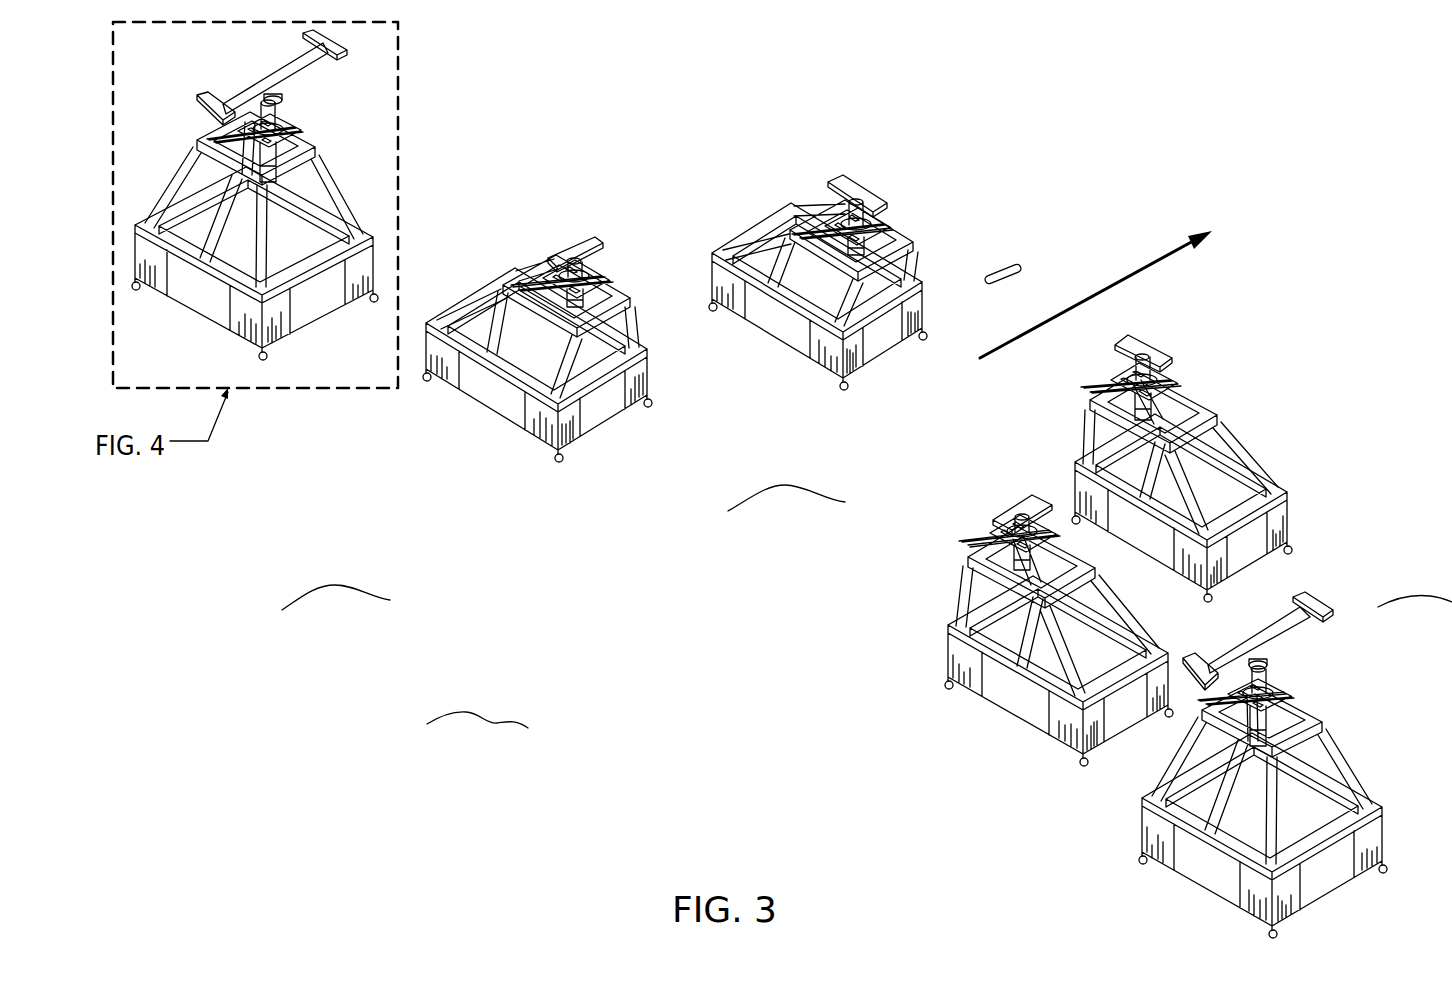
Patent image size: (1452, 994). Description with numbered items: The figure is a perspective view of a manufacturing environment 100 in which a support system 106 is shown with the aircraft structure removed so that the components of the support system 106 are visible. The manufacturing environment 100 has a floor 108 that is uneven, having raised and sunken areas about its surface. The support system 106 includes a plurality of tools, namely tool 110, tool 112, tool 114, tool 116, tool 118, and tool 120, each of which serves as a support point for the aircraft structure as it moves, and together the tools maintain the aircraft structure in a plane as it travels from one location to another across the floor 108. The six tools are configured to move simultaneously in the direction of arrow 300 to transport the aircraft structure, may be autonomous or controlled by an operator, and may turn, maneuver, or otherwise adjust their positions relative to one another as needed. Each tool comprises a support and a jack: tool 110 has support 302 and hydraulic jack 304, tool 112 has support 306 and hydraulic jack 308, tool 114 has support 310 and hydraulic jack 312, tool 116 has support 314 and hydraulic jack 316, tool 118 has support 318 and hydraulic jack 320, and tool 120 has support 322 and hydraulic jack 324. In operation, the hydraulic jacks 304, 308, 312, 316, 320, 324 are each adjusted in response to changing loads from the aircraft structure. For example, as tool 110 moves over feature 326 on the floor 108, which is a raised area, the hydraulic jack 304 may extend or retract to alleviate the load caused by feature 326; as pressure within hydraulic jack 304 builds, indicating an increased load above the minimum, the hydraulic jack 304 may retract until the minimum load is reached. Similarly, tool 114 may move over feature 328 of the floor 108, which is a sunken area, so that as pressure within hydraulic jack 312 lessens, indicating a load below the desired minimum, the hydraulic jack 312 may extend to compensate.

The manufacturing environment 100 is at (1262, 100).
The support system 106 is at (1090, 202).
The floor 108 is at (676, 691).
The tool 110 is at (190, 317).
The tool 112 is at (487, 422).
The tool 114 is at (773, 347).
The tool 116 is at (1186, 588).
The tool 118 is at (1011, 722).
The tool 120 is at (1179, 881).
The arrow 300 is at (1128, 277).
The support 302 is at (336, 184).
The hydraulic jack 304 is at (282, 104).
The support 306 is at (637, 325).
The hydraulic jack 308 is at (594, 262).
The support 310 is at (917, 266).
The hydraulic jack 312 is at (843, 204).
The support 314 is at (1243, 449).
The hydraulic jack 316 is at (1135, 364).
The support 318 is at (950, 617).
The hydraulic jack 320 is at (1032, 499).
The support 322 is at (1372, 747).
The hydraulic jack 324 is at (1268, 661).
The feature 326 is at (337, 585).
The feature 328 is at (1030, 254).